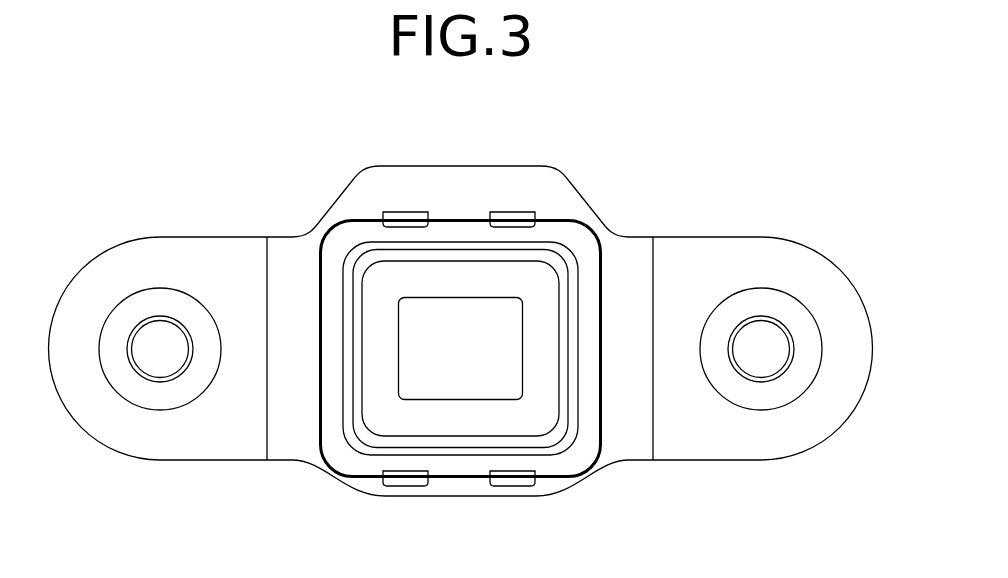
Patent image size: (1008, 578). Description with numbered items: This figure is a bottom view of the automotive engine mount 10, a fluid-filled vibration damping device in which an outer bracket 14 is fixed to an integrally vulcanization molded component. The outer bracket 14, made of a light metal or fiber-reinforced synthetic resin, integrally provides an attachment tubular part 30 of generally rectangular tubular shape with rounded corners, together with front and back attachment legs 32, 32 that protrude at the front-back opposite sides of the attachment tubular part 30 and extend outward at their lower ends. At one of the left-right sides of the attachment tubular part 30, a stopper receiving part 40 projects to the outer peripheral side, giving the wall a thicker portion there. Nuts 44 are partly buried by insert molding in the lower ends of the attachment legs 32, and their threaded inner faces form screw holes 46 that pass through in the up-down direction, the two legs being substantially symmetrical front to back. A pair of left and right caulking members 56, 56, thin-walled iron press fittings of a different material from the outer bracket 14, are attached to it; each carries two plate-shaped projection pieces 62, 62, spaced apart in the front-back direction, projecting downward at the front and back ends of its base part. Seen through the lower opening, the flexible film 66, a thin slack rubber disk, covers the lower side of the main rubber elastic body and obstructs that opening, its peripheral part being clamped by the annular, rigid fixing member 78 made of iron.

The engine mount 10 is at (762, 162).
The outer bracket 14 is at (652, 220).
The attachment tubular part 30 is at (352, 480).
The attachment leg 32 is at (105, 420).
The stopper receiving part 40 is at (368, 200).
The nut 44 is at (123, 325).
The screw hole 46 is at (156, 331).
The caulking member 56 is at (543, 215).
The projection piece 62 is at (408, 217).
The flexible film 66 is at (385, 400).
The fixing member 78 is at (453, 465).